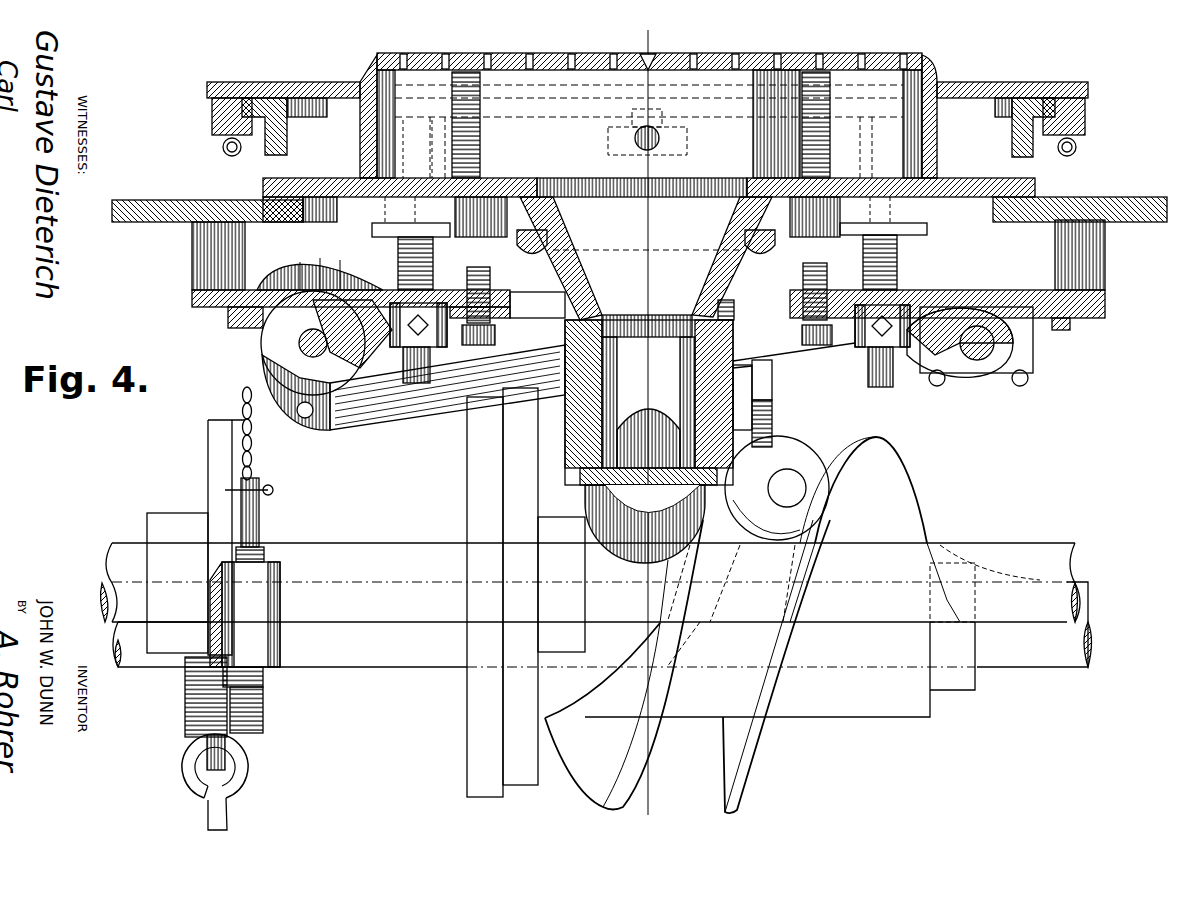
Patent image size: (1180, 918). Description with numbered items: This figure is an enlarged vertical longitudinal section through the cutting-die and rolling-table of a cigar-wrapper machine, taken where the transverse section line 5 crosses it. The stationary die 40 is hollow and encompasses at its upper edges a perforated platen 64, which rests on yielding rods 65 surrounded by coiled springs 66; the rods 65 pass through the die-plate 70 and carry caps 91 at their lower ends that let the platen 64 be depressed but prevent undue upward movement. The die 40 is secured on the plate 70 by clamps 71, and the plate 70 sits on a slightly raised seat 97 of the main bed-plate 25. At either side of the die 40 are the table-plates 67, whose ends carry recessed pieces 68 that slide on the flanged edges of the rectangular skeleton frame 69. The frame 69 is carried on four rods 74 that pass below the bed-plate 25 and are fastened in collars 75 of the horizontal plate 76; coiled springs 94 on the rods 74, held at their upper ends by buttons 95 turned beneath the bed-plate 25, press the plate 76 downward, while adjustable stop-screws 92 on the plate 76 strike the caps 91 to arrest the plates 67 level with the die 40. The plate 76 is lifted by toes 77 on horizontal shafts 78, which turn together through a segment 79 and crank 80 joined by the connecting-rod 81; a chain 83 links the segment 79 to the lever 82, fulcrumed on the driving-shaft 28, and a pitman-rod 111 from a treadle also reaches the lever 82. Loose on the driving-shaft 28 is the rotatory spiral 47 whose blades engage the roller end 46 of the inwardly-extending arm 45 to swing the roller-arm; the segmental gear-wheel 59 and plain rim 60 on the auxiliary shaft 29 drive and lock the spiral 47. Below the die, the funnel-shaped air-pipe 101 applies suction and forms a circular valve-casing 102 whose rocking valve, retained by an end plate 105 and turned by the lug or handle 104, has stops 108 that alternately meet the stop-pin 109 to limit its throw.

The section line 5 is at (645, 422).
The bed-plate 25 is at (186, 200).
The driving-shaft 28 is at (145, 667).
The auxiliary shaft 29 is at (584, 582).
The die 40 is at (924, 64).
The inwardly-extending arm 45 is at (777, 488).
The roller end 46 is at (760, 528).
The rotatory spiral 47 is at (792, 625).
The segmental gear-wheel 59 is at (544, 586).
The plain rim 60 is at (485, 597).
The perforated platen 64 is at (698, 48).
The yielding rods 65 is at (495, 130).
The coiled springs 66 is at (837, 155).
The plates 67 is at (297, 82).
The recessed pieces 68 is at (212, 118).
The rectangular skeleton frame 69 is at (305, 117).
The plate 70 is at (1035, 185).
The clamps 71 is at (606, 143).
The rods 74 is at (398, 250).
The collars 75 is at (440, 347).
The horizontal plate 76 is at (985, 276).
The toes 77 is at (970, 375).
The horizontal shafts 78 is at (300, 350).
The segment 79 is at (258, 285).
The crank 80 is at (910, 348).
The connecting-rod 81 is at (447, 387).
The lever 82 is at (224, 595).
The chain 83 is at (252, 440).
The caps 91 is at (495, 182).
The adjustable stop-screws 92 is at (655, 301).
The coiled springs 94 is at (433, 262).
The buttons 95 is at (378, 213).
The raised seat 97 is at (1040, 201).
The air-pipe 101 is at (632, 548).
The valve-casing 102 is at (655, 315).
The lug or handle 104 is at (772, 383).
The end plate 105 is at (565, 441).
The stops 108 is at (728, 282).
The stop-pin 109 is at (735, 308).
The pitman-rod 111 is at (221, 782).